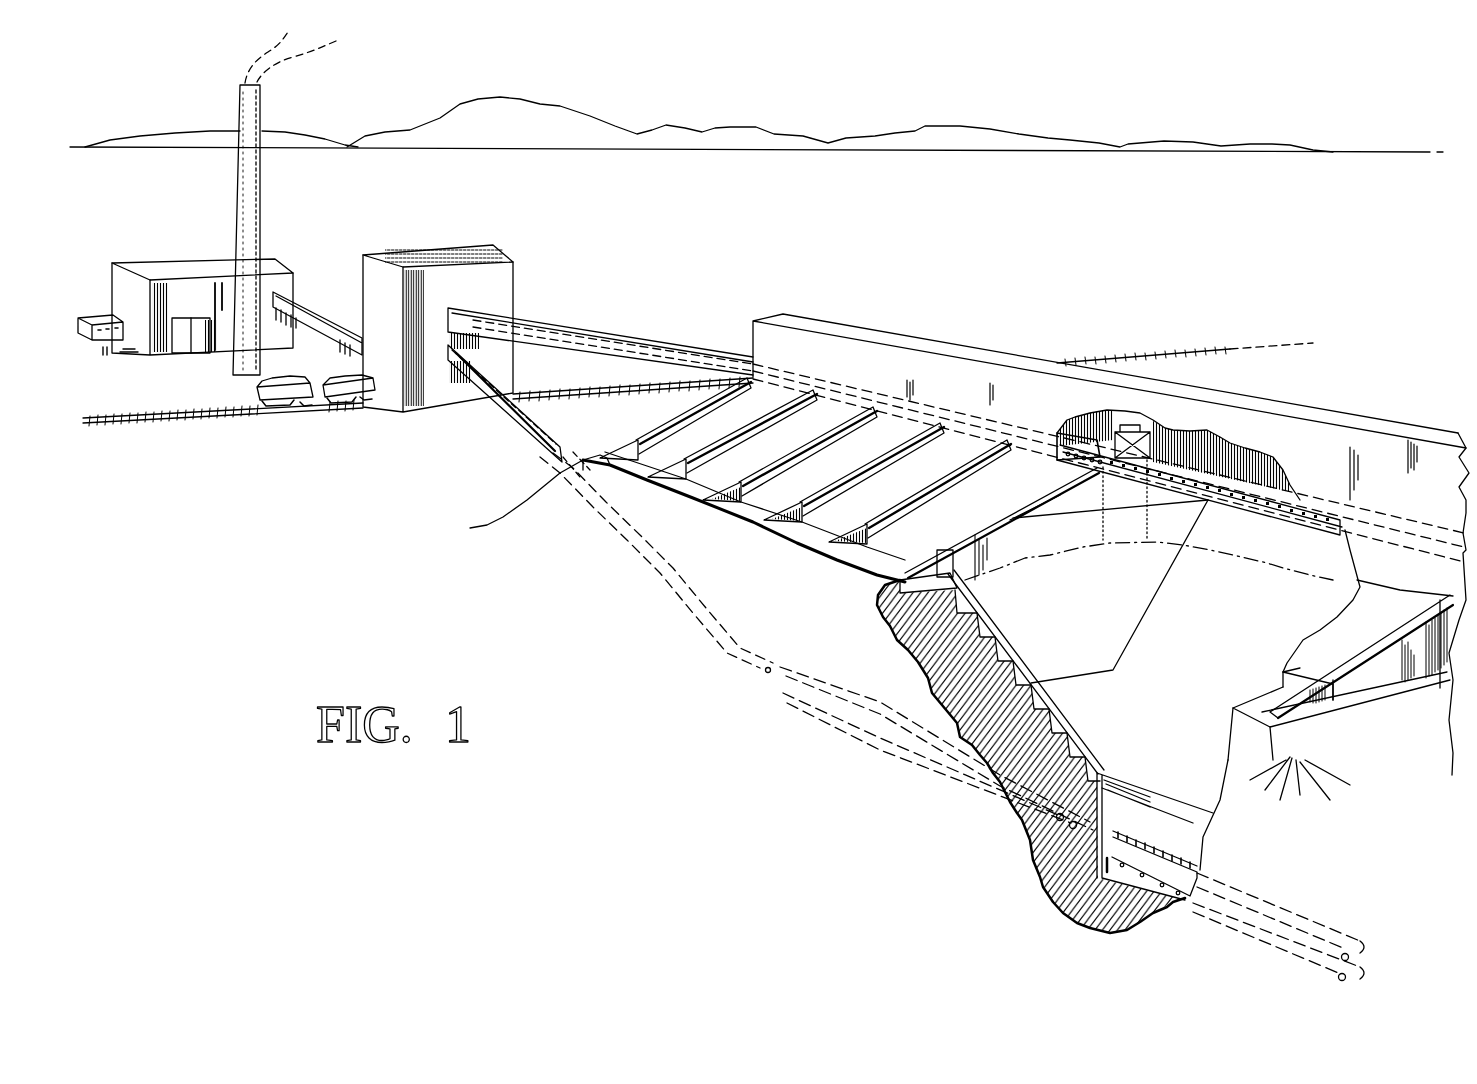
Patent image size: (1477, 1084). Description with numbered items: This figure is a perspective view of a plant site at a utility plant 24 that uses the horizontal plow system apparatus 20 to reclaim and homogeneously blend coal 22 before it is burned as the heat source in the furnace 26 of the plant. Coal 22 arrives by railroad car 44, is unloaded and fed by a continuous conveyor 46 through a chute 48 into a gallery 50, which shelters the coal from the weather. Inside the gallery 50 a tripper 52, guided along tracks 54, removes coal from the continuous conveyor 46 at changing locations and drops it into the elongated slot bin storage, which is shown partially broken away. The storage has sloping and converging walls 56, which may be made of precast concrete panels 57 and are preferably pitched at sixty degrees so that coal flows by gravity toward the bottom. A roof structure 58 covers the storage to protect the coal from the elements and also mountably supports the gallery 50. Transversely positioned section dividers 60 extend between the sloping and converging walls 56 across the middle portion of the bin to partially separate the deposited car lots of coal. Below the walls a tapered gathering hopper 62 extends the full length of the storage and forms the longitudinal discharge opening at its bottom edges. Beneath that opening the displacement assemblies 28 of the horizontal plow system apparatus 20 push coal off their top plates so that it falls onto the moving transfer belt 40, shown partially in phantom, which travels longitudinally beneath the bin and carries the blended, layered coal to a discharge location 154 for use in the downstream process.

The horizontal plow system apparatus 20 is at (1217, 840).
The coal 22 is at (337, 382).
The utility plant 24 is at (334, 229).
The furnace 26 is at (176, 262).
The displacement assemblies 28 is at (907, 728).
The moving transfer belt 40 is at (780, 695).
The railroad car 44 is at (350, 403).
The continuous conveyor 46 is at (1063, 443).
The chute 48 is at (611, 328).
The gallery 50 is at (778, 320).
The tripper 52 is at (1133, 442).
The tracks 54 is at (1132, 465).
The sloping and converging walls 56 is at (1013, 650).
The precast concrete panels 57 is at (1060, 733).
The roof structure 58 is at (683, 430).
The section dividers 60 is at (1160, 567).
The tapered gathering hopper 62 is at (1150, 803).
The discharge location 154 is at (448, 373).